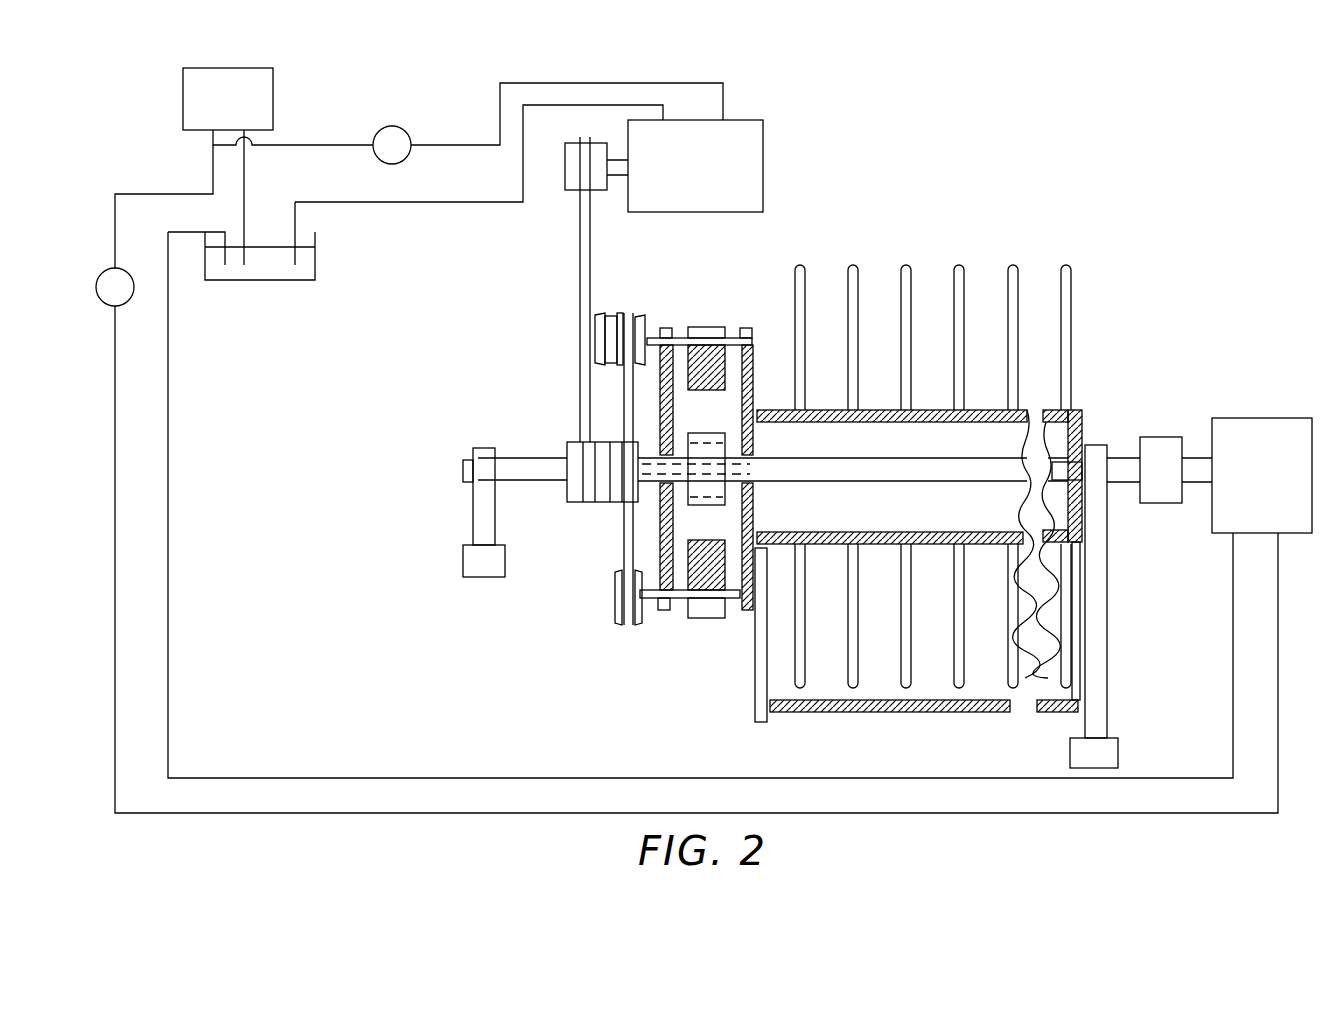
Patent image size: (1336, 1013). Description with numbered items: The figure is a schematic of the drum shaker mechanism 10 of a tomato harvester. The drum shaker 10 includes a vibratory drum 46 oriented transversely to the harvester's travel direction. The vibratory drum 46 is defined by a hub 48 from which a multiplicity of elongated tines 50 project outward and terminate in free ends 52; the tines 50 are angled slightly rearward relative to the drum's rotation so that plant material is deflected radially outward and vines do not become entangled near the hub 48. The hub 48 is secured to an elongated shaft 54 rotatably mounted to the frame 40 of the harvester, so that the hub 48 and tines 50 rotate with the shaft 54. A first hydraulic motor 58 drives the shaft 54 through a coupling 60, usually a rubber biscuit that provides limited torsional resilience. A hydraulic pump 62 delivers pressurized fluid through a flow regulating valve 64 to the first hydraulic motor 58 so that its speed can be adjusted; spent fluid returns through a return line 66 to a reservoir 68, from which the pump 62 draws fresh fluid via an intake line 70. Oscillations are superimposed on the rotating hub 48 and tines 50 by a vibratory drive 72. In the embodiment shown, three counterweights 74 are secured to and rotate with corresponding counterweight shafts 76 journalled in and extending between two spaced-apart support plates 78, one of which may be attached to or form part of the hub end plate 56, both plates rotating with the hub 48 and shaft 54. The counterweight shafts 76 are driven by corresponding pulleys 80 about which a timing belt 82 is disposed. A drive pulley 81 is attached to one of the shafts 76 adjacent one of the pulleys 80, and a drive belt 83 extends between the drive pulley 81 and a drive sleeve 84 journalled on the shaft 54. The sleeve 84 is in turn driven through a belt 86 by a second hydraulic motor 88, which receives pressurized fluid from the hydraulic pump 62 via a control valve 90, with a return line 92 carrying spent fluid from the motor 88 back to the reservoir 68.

The drum shaker mechanism 10 is at (452, 661).
The frame 40 is at (482, 520).
The vibratory drum 46 is at (1105, 285).
The hub 48 is at (1077, 412).
The tines 50 is at (906, 326).
The free ends 52 is at (958, 263).
The shaft 54 is at (527, 463).
The hub end plate 56 is at (753, 452).
The first hydraulic motor 58 is at (1257, 428).
The coupling 60 is at (1157, 440).
The hydraulic pump 62 is at (233, 68).
The flow regulating valve 64 is at (103, 276).
The return line 66 is at (172, 333).
The reservoir 68 is at (315, 255).
The intake line 70 is at (246, 194).
The vibratory drive 72 is at (525, 331).
The counterweights 74 is at (699, 327).
The counterweight shafts 76 is at (733, 330).
The support plates 78 is at (745, 405).
The pulleys 80 is at (618, 368).
The drive pulley 81 is at (596, 342).
The timing belt 82 is at (617, 316).
The drive belt 83 is at (603, 316).
The drive sleeve 84 is at (594, 505).
The belt 86 is at (585, 218).
The second hydraulic motor 88 is at (760, 145).
The control valve 90 is at (402, 130).
The return line 92 is at (432, 202).